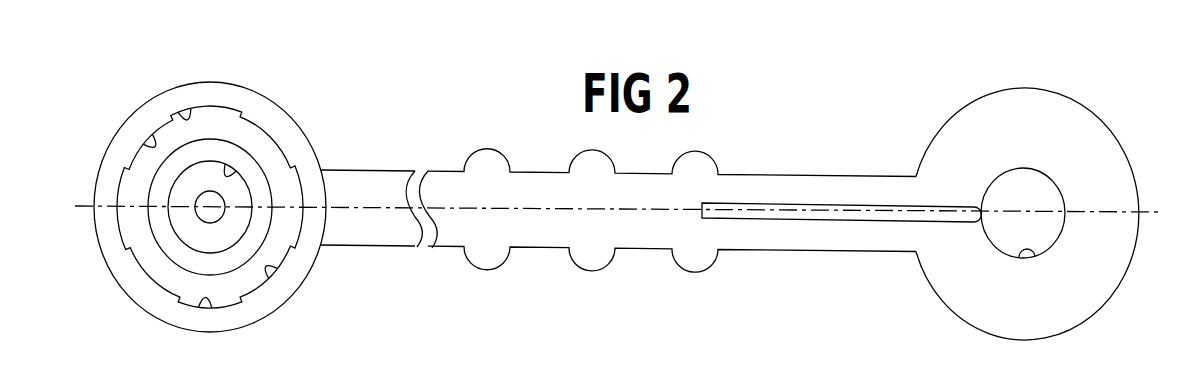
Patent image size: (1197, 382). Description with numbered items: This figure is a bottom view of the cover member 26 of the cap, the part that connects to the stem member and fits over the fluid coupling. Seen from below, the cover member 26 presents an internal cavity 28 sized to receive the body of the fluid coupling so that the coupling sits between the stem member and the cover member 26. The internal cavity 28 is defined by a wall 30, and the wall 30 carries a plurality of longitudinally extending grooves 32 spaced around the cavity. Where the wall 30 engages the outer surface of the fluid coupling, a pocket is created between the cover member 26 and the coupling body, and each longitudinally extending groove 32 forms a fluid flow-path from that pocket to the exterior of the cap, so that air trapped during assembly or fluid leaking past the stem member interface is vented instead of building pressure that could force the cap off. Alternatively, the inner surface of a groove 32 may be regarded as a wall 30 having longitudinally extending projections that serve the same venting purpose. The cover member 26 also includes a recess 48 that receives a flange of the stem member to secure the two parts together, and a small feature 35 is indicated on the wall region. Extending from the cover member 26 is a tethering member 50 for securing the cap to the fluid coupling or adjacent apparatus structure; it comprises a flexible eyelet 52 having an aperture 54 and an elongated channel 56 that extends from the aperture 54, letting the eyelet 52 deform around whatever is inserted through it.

The cover member 26 is at (372, 112).
The internal cavity 28 is at (265, 148).
The wall 30 is at (148, 141).
The longitudinally extending groove 32 is at (211, 302).
The groove 35 is at (183, 111).
The recess 48 is at (219, 169).
The tethering member 50 is at (758, 172).
The flexible eyelet 52 is at (1060, 316).
The aperture 54 is at (1017, 258).
The elongated channel 56 is at (887, 223).